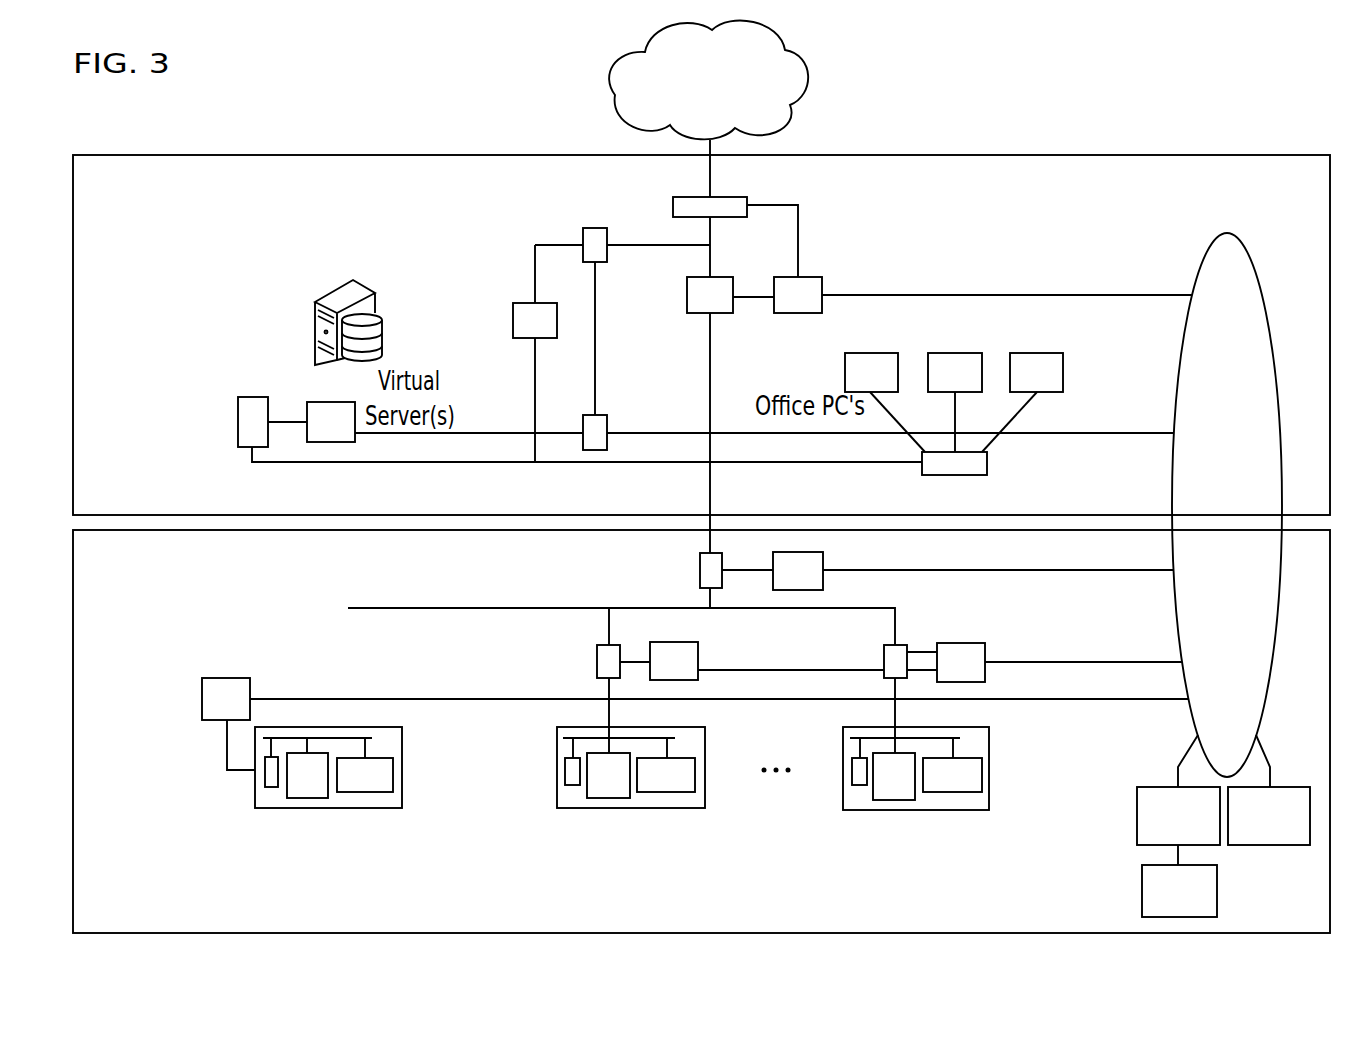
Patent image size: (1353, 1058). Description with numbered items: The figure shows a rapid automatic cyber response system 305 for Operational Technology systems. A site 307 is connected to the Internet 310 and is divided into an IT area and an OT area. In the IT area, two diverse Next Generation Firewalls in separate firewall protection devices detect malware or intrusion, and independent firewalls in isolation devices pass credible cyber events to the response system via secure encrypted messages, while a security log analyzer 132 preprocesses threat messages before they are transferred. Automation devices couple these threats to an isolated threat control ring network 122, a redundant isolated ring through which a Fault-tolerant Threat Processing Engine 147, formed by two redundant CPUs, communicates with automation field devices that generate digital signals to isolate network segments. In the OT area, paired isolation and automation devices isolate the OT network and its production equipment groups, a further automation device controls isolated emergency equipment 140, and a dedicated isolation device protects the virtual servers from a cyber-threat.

The rapid automatic cyber response system 305 is at (1087, 116).
The site 307 is at (193, 155).
The Internet 310 is at (810, 77).
The security log analyzer 132 is at (525, 303).
The isolated threat control ring network 122 is at (1197, 275).
The isolated emergency equipment 140 is at (328, 808).
The Fault-tolerant Threat Processing Engine 147 is at (1200, 905).